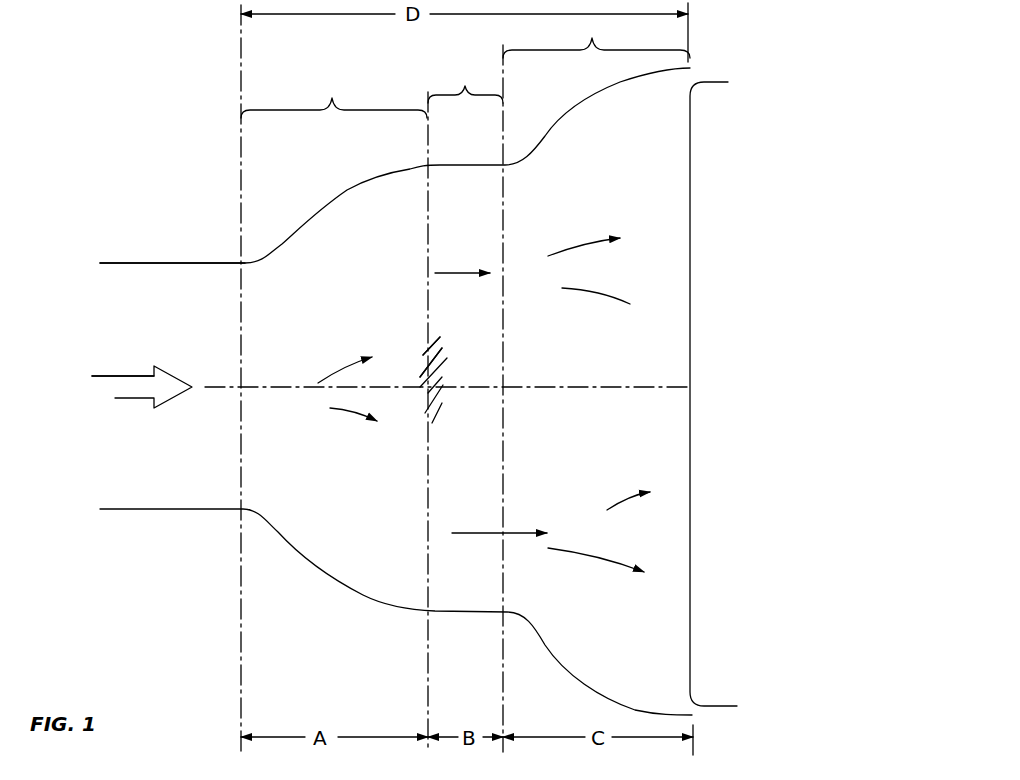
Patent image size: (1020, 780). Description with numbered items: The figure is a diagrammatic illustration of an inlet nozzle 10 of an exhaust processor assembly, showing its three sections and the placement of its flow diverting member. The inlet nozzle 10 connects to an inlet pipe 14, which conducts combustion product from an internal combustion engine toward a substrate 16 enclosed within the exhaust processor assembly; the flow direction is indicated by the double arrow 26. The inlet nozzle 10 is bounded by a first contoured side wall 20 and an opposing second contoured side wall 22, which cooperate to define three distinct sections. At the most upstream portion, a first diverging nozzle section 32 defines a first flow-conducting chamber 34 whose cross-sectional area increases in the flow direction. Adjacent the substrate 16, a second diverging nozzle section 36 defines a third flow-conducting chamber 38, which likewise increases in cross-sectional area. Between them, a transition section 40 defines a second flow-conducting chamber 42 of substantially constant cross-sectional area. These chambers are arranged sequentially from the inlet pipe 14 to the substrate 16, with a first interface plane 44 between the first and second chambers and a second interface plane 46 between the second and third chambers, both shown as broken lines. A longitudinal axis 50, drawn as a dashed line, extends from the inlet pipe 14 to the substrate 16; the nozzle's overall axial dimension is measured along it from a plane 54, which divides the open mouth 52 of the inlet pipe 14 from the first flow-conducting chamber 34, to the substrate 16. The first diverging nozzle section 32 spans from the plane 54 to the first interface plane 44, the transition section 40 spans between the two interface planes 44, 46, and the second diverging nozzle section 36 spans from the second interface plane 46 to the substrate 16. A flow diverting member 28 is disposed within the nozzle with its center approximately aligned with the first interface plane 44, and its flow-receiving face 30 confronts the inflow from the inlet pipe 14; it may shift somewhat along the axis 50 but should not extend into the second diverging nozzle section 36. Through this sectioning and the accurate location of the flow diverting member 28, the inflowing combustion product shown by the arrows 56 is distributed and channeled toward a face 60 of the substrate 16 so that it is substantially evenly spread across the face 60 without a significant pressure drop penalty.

The inlet nozzle 10 is at (262, 162).
The inlet pipe 14 is at (153, 511).
The substrate 16 is at (713, 394).
The first contoured side wall 20 is at (573, 109).
The second contoured side wall 22 is at (366, 598).
The flow direction arrow 26 is at (134, 376).
The flow diverting member 28 is at (420, 340).
The flow-receiving face 30 is at (422, 408).
The first diverging nozzle section 32 is at (334, 96).
The first flow-conducting chamber 34 is at (346, 492).
The second diverging nozzle section 36 is at (596, 36).
The third flow-conducting chamber 38 is at (594, 606).
The transition section 40 is at (465, 84).
The second flow-conducting chamber 42 is at (461, 556).
The first interface plane 44 is at (427, 152).
The second interface plane 46 is at (503, 200).
The longitudinal axis 50 is at (625, 387).
The open mouth 52 is at (258, 282).
The plane 54 is at (242, 598).
The arrows 56 is at (340, 372).
The face 60 is at (690, 433).